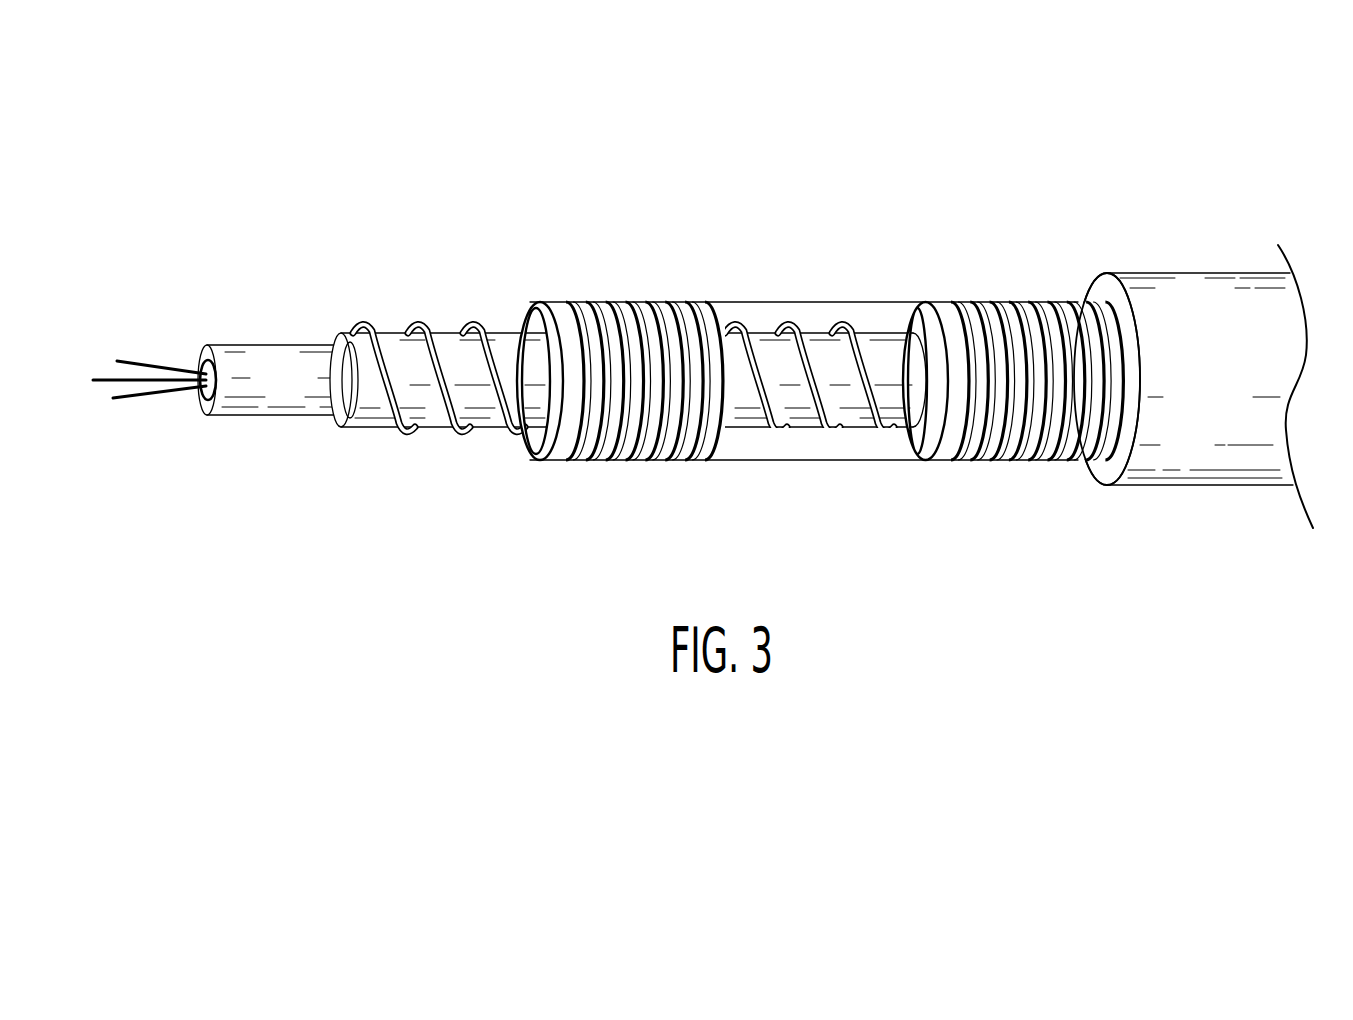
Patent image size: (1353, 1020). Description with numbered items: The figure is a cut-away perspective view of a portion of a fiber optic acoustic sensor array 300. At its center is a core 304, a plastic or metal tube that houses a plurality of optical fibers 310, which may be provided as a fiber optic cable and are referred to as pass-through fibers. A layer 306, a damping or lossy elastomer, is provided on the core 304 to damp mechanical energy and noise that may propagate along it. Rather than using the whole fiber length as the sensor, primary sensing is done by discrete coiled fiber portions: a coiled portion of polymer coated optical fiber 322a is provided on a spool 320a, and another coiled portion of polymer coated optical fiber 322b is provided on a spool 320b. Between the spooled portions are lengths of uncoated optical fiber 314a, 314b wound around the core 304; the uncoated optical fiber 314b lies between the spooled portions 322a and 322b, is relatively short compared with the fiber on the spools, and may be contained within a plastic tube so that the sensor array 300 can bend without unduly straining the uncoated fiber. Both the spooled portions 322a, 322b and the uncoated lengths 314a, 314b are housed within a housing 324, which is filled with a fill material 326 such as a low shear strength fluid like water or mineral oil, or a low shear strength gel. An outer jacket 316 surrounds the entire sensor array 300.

The fiber optic acoustic sensor array 300 is at (703, 326).
The core 304 is at (270, 347).
The layer 306 is at (363, 428).
The optical fibers 310 is at (143, 362).
The uncoated optical fiber 314a is at (477, 323).
The uncoated optical fiber 314b is at (848, 327).
The outer jacket 316 is at (1190, 272).
The spool 320a is at (621, 390).
The spool 320b is at (1009, 347).
The coiled portion of optical fiber 322a is at (652, 312).
The coiled portion of optical fiber 322b is at (1037, 312).
The housing 324 is at (783, 461).
The fill material 326 is at (842, 447).